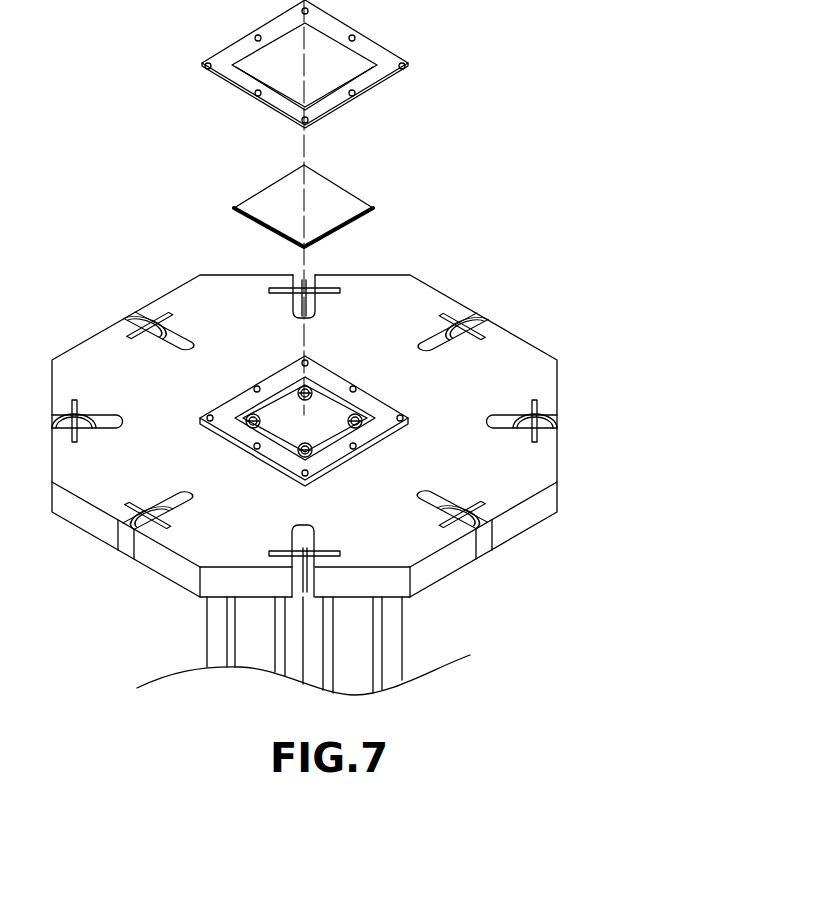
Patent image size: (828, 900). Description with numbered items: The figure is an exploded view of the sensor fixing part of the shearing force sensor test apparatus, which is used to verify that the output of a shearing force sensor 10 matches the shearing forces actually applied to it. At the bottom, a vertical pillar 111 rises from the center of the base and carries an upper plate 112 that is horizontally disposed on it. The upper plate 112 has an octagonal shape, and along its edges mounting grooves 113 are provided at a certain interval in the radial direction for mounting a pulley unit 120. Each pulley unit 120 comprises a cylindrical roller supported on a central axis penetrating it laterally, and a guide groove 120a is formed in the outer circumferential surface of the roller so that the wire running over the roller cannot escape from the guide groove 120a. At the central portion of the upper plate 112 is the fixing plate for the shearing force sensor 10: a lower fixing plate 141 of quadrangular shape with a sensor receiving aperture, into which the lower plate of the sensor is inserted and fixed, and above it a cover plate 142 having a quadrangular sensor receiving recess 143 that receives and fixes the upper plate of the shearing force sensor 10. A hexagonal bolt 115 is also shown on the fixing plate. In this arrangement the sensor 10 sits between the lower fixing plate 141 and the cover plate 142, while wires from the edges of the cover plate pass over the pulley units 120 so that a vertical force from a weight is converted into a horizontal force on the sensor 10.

The shearing force sensor 10 is at (372, 175).
The vertical pillar 111 is at (393, 631).
The upper plate 112 is at (487, 484).
The mounting groove 113 is at (433, 337).
The hexagonal bolt 115 is at (250, 418).
The pulley unit 120 is at (457, 318).
The guide groove 120a is at (468, 322).
The lower fixing plate 141 is at (277, 378).
The cover plate 142 is at (240, 78).
The sensor receiving recess 143 is at (338, 57).